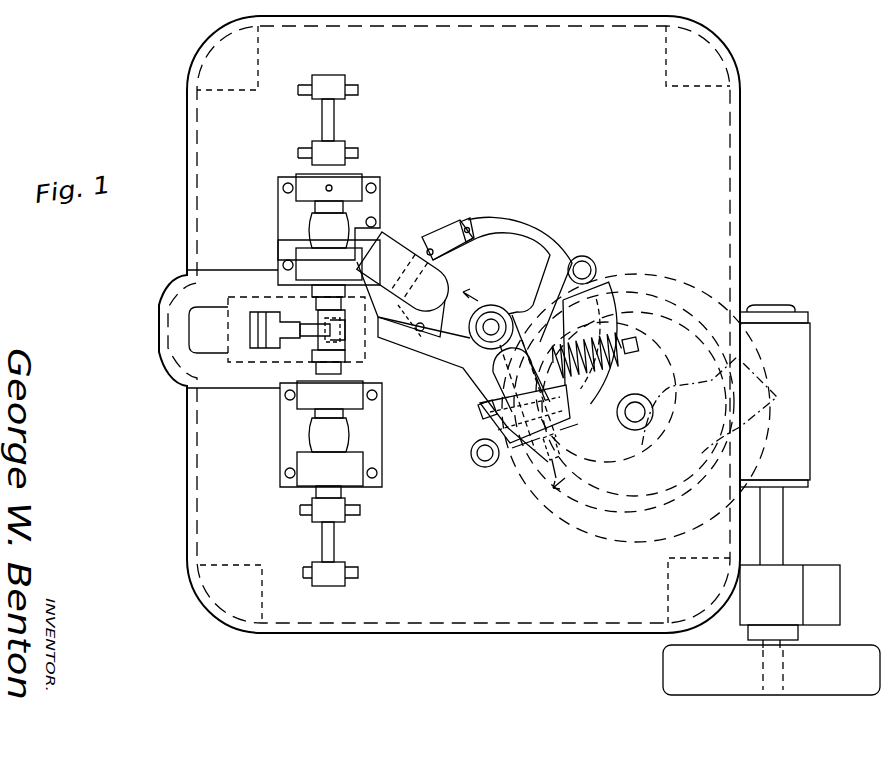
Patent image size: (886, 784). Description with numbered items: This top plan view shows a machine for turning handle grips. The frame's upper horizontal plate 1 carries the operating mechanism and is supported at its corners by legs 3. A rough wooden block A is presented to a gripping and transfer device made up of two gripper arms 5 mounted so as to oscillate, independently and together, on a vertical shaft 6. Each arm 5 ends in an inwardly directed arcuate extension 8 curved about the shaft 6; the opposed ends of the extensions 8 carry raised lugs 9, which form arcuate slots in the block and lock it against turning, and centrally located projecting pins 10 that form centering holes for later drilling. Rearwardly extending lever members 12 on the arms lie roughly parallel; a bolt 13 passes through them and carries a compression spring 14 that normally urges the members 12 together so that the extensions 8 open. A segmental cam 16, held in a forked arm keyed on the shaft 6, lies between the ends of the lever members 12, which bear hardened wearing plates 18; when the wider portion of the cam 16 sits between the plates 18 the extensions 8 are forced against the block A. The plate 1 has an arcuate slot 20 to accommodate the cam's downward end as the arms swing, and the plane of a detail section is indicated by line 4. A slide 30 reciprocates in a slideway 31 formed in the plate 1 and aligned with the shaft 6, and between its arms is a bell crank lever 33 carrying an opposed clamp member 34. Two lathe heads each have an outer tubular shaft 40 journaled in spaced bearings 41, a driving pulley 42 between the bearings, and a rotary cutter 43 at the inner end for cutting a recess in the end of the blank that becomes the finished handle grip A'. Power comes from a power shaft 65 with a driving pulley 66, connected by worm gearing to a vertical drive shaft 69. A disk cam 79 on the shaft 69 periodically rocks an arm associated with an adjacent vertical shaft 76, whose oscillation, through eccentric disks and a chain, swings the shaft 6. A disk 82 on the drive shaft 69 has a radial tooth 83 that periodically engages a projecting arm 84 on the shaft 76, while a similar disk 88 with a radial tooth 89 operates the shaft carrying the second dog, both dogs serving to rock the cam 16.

The upper plate 1 is at (718, 172).
The legs 3 is at (212, 97).
The section line 4 is at (514, 385).
The gripper arms 5 is at (445, 360).
The vertical shaft 6 is at (491, 322).
The arcuate extension 8 is at (415, 236).
The raised lugs 9 is at (430, 245).
The projecting pins 10 is at (466, 224).
The lever members 12 is at (475, 418).
The bolt 13 is at (480, 383).
The compression spring 14 is at (592, 386).
The segmental cam 16 is at (540, 462).
The wearing plates 18 is at (520, 455).
The arcuate slot 20 is at (612, 297).
The slide 30 is at (228, 334).
The slideway 31 is at (224, 276).
The bell crank lever 33 is at (250, 330).
The opposed clamp member 34 is at (305, 350).
The outer tubular shaft 40 is at (313, 207).
The bearings 41 is at (300, 180).
The driving pulley 42 is at (310, 225).
The rotary cutter 43 is at (310, 296).
The power shaft 65 is at (785, 550).
The driving pulley 66 is at (848, 650).
The vertical drive shaft 69 is at (648, 417).
The vertical shaft 76 is at (470, 458).
The disk cam 79 is at (686, 280).
The disk 82 is at (698, 330).
The radial tooth 83 is at (779, 396).
The projecting arm 84 is at (596, 262).
The disk 88 is at (558, 520).
The radial tooth 89 is at (478, 412).
The block A is at (439, 215).
The handle grip A' is at (361, 360).